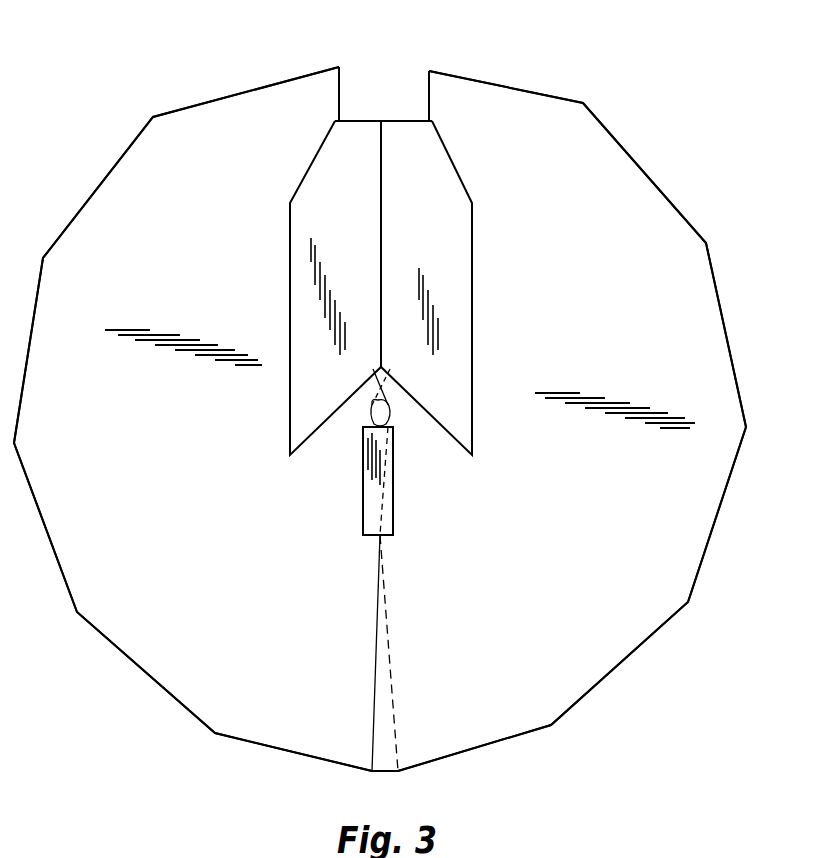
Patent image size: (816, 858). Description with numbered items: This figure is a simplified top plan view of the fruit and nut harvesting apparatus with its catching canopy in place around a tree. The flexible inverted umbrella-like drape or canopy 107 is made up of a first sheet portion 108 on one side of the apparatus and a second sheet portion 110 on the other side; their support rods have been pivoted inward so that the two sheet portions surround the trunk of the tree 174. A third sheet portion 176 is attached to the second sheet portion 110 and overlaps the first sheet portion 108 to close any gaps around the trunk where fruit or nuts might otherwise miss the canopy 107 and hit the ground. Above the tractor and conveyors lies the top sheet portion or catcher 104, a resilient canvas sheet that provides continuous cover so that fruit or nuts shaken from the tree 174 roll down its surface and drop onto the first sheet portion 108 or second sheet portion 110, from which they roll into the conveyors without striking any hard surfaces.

The top sheet portion or catcher 104 is at (310, 222).
The flexible inverted umbrella-like drape or canopy 107 is at (552, 82).
The first sheet portion 108 is at (122, 185).
The second sheet portion 110 is at (623, 168).
The tree 174 is at (372, 413).
The third sheet portion 176 is at (370, 505).